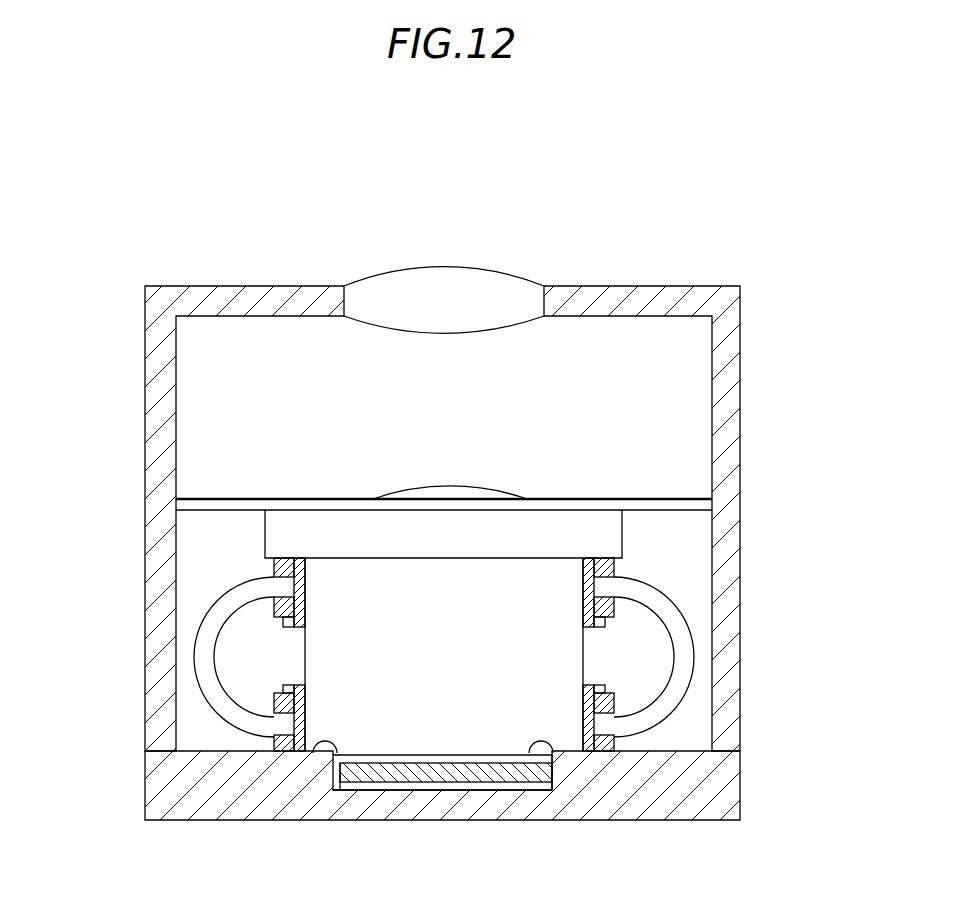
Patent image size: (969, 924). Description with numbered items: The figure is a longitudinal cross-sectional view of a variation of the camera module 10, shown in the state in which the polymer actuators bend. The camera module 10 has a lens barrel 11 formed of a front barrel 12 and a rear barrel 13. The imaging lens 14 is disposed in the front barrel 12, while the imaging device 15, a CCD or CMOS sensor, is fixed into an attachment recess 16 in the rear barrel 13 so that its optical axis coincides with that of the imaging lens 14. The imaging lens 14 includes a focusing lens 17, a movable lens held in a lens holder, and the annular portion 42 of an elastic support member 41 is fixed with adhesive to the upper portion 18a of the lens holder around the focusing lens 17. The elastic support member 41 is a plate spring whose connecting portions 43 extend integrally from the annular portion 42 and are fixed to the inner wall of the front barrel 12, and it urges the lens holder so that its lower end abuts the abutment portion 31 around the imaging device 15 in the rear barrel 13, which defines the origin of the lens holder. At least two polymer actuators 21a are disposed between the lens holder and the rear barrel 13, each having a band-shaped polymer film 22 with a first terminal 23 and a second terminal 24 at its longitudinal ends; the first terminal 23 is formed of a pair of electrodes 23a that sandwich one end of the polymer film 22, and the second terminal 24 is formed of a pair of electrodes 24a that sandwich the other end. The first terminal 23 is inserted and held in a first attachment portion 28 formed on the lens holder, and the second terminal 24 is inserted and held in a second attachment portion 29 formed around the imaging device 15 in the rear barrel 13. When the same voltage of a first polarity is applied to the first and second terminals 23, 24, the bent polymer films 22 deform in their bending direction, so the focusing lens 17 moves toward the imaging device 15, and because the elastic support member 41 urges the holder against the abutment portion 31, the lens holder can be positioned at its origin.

The camera module 10 is at (552, 246).
The lens barrel 11 is at (828, 730).
The front barrel 12 is at (728, 737).
The rear barrel 13 is at (722, 797).
The imaging lens 14 is at (450, 284).
The imaging device 15 is at (480, 770).
The attachment recess 16 is at (403, 790).
The focusing lens 17 is at (443, 489).
The upper portion of the lens holder 18a is at (586, 511).
The polymer actuator 21a is at (177, 664).
The polymer film 22 is at (220, 683).
The first terminal 23 is at (226, 577).
The electrode 23a is at (262, 557).
The second terminal 24 is at (248, 742).
The electrode 24a is at (273, 700).
The first attachment portion 28 is at (305, 580).
The second attachment portion 29 is at (307, 698).
The abutment portion 31 is at (313, 753).
The elastic support member 41 is at (661, 488).
The annular portion 42 is at (327, 498).
The connecting portion 43 is at (213, 496).